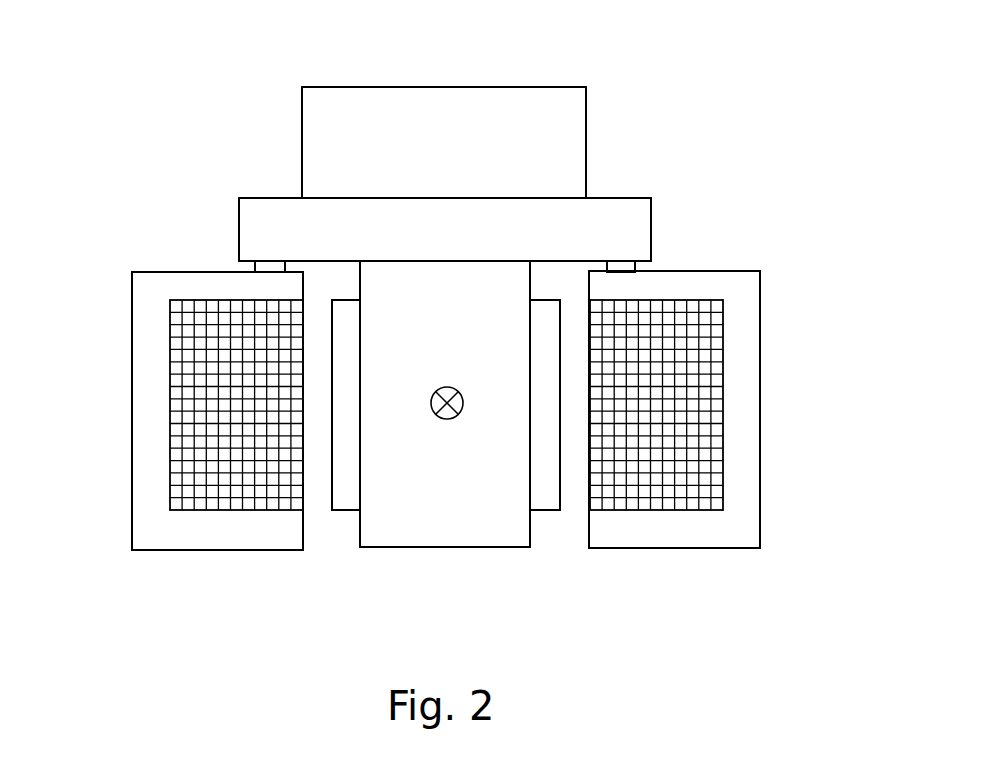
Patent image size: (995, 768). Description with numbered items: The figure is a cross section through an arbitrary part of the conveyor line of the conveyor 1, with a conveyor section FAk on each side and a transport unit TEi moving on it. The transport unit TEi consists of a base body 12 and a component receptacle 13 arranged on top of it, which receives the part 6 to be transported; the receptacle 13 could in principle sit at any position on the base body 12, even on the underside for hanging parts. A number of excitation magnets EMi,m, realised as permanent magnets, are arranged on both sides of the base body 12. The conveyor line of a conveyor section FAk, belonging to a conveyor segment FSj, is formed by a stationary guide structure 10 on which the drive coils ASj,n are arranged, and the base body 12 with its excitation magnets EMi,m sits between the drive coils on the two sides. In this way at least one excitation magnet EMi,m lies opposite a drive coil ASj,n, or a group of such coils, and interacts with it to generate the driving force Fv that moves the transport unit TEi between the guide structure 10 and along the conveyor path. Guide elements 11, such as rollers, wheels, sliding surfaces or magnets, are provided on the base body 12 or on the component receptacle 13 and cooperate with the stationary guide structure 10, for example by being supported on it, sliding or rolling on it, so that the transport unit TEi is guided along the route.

The conveyor 1 is at (732, 203).
The part to be transported 6 is at (527, 117).
The transport unit TEi is at (452, 225).
The component receptacle 13 is at (367, 225).
The guide elements 11 is at (270, 260).
The base body 12 is at (438, 473).
The excitation magnets EMi,m is at (347, 457).
The driving force Fv is at (456, 391).
The guide structure 10 is at (152, 468).
The drive coils ASj,n is at (217, 473).
The conveyor segment FSj is at (148, 245).
The conveyor section FAk is at (122, 335).